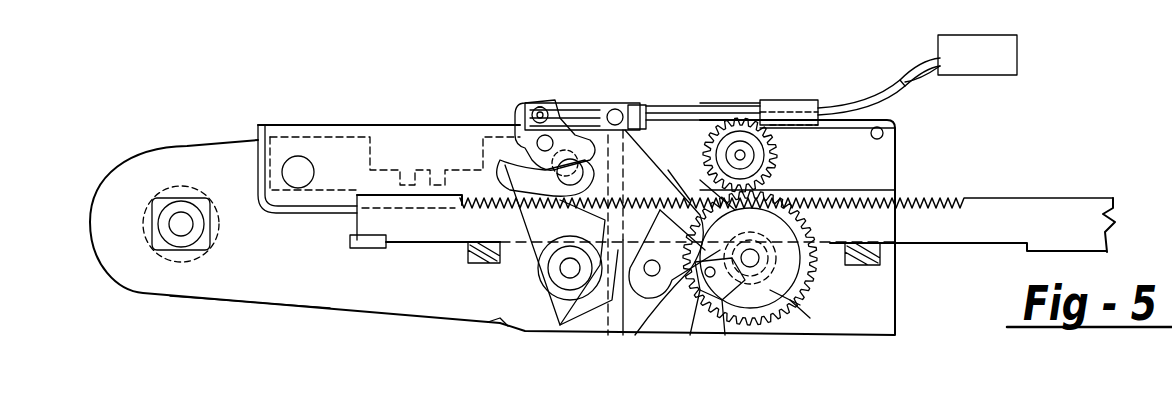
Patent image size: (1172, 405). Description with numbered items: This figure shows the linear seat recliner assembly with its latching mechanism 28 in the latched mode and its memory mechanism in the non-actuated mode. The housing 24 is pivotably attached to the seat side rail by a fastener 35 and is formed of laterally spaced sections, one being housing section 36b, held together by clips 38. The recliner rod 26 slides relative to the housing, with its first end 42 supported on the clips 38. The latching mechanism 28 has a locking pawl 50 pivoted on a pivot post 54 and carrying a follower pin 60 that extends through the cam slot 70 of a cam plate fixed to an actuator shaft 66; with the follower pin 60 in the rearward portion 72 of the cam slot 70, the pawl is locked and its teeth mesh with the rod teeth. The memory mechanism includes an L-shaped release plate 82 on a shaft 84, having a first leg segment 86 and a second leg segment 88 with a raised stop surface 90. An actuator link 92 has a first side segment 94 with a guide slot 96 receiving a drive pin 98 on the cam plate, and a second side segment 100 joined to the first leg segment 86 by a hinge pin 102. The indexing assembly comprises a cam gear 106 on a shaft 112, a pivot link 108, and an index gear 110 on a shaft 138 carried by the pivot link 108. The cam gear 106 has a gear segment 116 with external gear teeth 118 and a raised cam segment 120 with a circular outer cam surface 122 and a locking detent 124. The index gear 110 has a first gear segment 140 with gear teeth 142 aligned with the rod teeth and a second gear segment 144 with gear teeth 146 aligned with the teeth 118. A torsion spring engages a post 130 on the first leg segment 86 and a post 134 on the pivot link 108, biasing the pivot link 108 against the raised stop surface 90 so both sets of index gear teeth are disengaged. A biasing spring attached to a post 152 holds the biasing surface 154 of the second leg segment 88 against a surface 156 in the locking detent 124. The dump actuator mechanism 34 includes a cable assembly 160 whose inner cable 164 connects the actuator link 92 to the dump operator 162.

The housing 24 is at (196, 297).
The recliner rod 26 is at (1053, 200).
The latching mechanism 28 is at (386, 105).
The dump actuator mechanism 34 is at (845, 92).
The fastener 35 is at (181, 220).
The housing section 36b is at (314, 297).
The clips 38 is at (470, 252).
The first end 42 is at (437, 237).
The locking pawl 50 is at (378, 137).
The pivot post 54 is at (298, 168).
The follower pin 60 is at (560, 168).
The actuator shaft 66 is at (505, 328).
The cam slot 70 is at (538, 265).
The rearward portion 72 is at (575, 105).
The release plate 82 is at (548, 322).
The shaft 84 is at (582, 317).
The first leg segment 86 is at (655, 114).
The second leg segment 88 is at (662, 300).
The raised stop surface 90 is at (640, 305).
The actuator link 92 is at (608, 100).
The first side segment 94 is at (530, 125).
The guide slot 96 is at (548, 108).
The drive pin 98 is at (535, 108).
The second side segment 100 is at (648, 110).
The hinge pin 102 is at (622, 108).
The cam gear 106 is at (805, 312).
The pivot link 108 is at (790, 196).
The index gear 110 is at (795, 152).
The shaft 112 is at (830, 250).
The gear segment 116 is at (795, 308).
The external gear teeth 118 is at (820, 280).
The raised cam segment 120 is at (805, 300).
The circular outer cam surface 122 is at (805, 298).
The locking detent 124 is at (728, 325).
The post 130 is at (642, 104).
The post 134 is at (775, 175).
The shaft 138 is at (800, 135).
The first gear segment 140 is at (762, 110).
The gear teeth 142 is at (725, 130).
The second gear segment 144 is at (792, 92).
The gear teeth 146 is at (778, 102).
The post 152 is at (742, 300).
The biasing surface 154 is at (694, 195).
The surface 156 is at (702, 300).
The cable assembly 160 is at (843, 85).
The dump operator 162 is at (961, 58).
The inner cable 164 is at (705, 110).